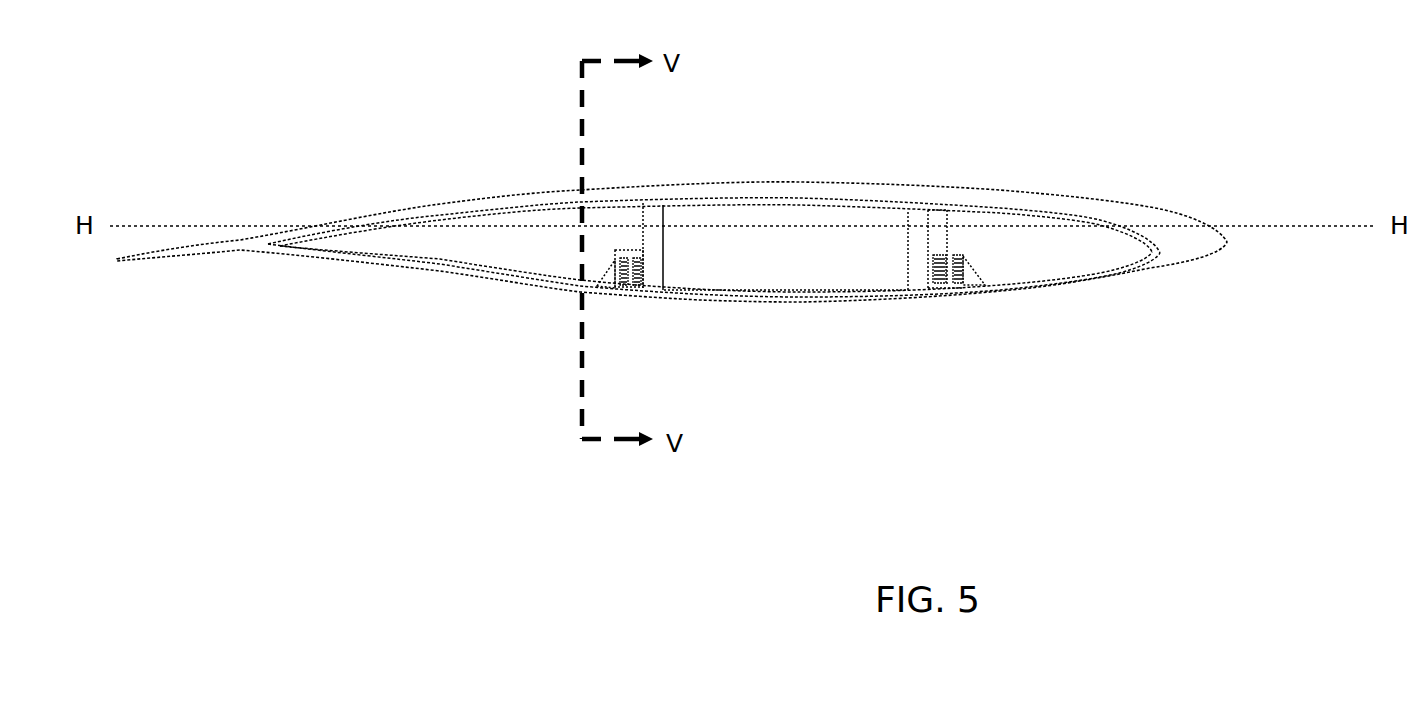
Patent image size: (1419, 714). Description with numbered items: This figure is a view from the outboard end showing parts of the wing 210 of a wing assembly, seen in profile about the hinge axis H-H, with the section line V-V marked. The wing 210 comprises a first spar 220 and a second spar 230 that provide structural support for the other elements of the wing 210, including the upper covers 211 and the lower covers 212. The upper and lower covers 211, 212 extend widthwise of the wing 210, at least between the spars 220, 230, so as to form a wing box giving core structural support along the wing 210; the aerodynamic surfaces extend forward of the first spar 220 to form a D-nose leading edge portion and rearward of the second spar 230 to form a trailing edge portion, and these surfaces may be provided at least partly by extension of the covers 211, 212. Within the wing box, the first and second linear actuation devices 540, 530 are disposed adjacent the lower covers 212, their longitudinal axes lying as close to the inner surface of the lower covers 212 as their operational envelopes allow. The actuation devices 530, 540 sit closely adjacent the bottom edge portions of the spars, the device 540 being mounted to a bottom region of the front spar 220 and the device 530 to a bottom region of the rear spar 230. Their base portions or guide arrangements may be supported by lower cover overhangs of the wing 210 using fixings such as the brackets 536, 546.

The wing 210 is at (432, 192).
The upper covers 211 is at (805, 202).
The lower covers 212 is at (860, 287).
The first spar 220 is at (918, 220).
The second spar 230 is at (653, 215).
The second linear actuation device 530 is at (638, 288).
The bracket 536 is at (611, 264).
The first linear actuation device 540 is at (955, 284).
The bracket 546 is at (975, 280).